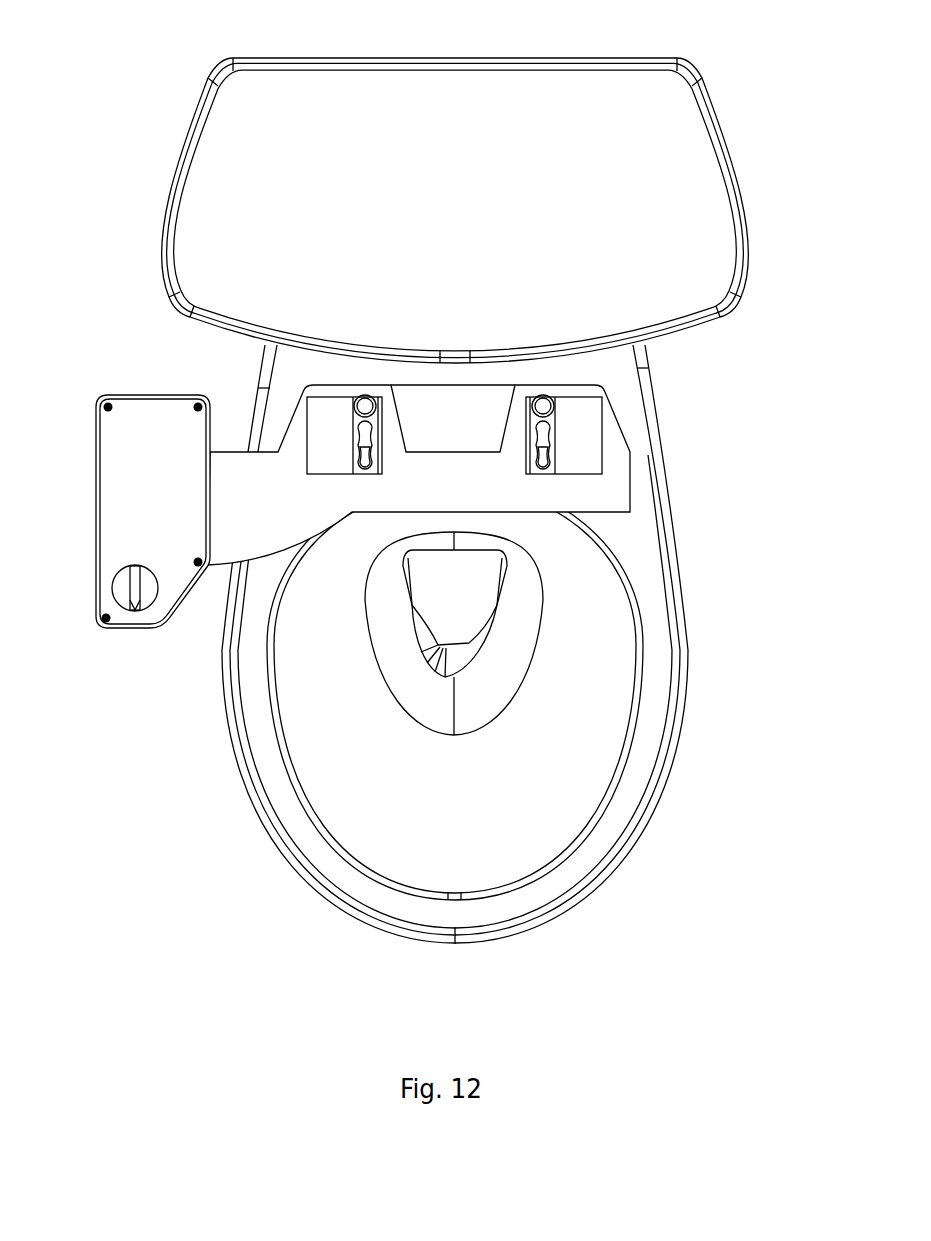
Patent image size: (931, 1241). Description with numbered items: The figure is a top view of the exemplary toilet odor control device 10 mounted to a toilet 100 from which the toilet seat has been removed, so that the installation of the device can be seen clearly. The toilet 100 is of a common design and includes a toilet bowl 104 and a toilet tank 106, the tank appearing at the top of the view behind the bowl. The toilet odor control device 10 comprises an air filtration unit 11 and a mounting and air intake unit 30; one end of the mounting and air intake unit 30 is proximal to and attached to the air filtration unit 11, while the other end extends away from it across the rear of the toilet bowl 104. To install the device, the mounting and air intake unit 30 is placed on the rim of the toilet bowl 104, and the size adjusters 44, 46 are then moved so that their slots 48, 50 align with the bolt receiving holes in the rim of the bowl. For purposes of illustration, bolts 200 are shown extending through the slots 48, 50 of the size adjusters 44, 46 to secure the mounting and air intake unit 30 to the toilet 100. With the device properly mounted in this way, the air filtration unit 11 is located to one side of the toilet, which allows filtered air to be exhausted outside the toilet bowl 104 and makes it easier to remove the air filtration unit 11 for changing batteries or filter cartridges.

The toilet 100 is at (146, 59).
The toilet tank 106 is at (688, 150).
The toilet bowl 104 is at (640, 780).
The toilet odor control device 10 is at (74, 403).
The air filtration unit 11 is at (118, 545).
The mounting and air intake unit 30 is at (597, 493).
The bolts 200 is at (363, 405).
The size adjuster 44 is at (355, 455).
The size adjuster 46 is at (553, 434).
The slot 48 is at (363, 437).
The slot 50 is at (542, 455).